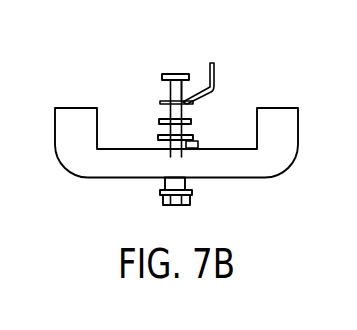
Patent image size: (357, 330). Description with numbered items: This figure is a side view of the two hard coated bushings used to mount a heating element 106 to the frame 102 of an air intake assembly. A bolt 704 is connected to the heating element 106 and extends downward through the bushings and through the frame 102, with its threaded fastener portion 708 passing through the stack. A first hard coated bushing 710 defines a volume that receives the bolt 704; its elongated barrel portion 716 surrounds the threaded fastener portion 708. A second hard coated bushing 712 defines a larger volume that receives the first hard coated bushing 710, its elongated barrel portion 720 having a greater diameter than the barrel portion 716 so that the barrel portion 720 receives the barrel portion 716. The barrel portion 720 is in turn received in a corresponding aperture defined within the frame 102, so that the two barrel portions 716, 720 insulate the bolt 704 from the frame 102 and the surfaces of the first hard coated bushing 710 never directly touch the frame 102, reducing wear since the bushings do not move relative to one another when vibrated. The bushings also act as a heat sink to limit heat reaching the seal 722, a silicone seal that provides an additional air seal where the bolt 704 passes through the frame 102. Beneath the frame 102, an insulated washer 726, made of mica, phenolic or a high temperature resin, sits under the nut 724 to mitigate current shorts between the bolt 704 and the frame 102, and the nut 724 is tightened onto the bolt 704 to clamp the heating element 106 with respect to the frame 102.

The frame 102 is at (80, 145).
The bolt 704 is at (170, 90).
The threaded fastener portion 708 is at (182, 94).
The heating element 106 is at (215, 78).
The elongated barrel portion 716 is at (159, 123).
The first hard coated bushing 710 is at (192, 120).
The second hard coated bushing 712 is at (160, 139).
The elongated barrel portion 720 is at (198, 148).
The seal 722 is at (186, 183).
The insulated washer 726 is at (165, 185).
The nut 724 is at (163, 200).